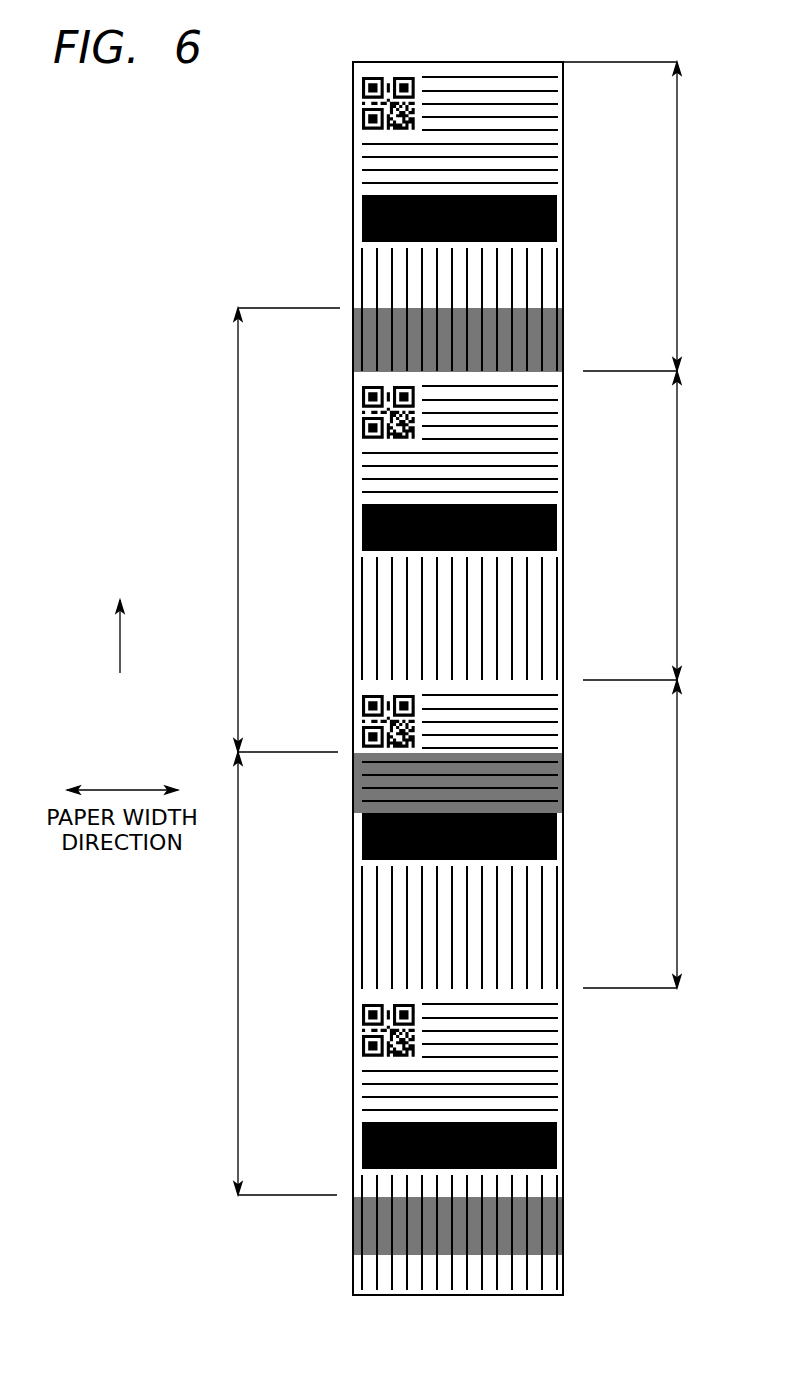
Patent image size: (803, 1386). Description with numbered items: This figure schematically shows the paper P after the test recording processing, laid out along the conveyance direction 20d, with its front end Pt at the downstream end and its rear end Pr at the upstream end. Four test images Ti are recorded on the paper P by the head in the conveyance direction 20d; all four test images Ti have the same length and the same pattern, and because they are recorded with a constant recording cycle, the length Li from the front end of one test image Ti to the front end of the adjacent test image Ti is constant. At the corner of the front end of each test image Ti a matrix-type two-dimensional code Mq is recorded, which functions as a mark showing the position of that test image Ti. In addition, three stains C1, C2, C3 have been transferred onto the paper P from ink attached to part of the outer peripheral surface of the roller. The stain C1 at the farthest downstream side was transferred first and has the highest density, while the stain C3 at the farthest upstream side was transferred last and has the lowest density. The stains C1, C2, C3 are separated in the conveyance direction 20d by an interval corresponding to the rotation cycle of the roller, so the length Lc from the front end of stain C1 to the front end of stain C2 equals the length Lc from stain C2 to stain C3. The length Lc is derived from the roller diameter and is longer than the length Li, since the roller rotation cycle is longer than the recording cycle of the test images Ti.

The paper P is at (450, 62).
The front end of the paper Pt is at (485, 62).
The rear end of the paper Pr is at (455, 1295).
The test image Ti is at (570, 680).
The matrix-type two-dimensional code Mq is at (349, 102).
The stain C1 is at (353, 338).
The stain C2 is at (353, 787).
The stain C3 is at (348, 1228).
The length Li is at (634, 525).
The length Lc is at (274, 751).
The conveyance direction 20d is at (118, 650).